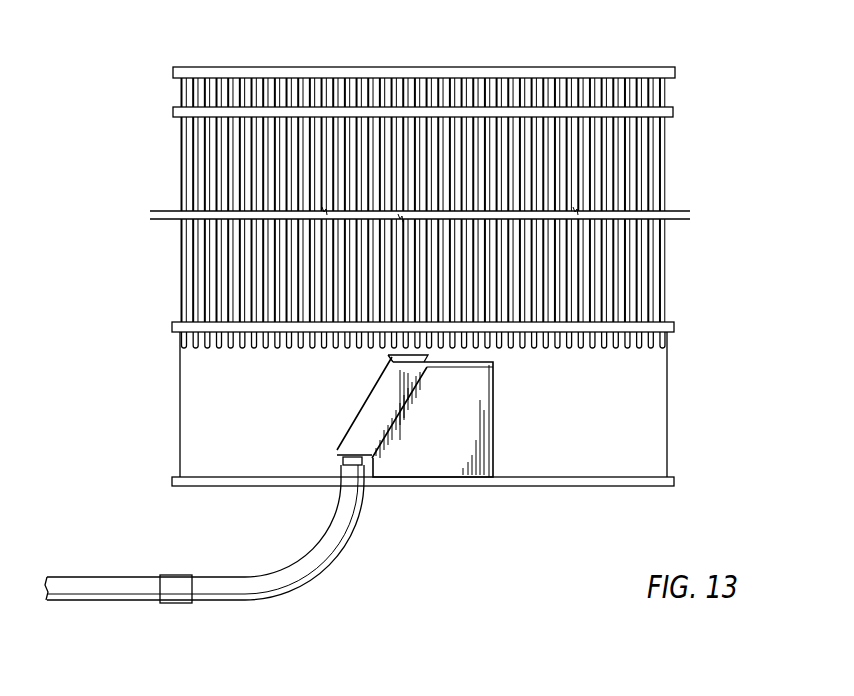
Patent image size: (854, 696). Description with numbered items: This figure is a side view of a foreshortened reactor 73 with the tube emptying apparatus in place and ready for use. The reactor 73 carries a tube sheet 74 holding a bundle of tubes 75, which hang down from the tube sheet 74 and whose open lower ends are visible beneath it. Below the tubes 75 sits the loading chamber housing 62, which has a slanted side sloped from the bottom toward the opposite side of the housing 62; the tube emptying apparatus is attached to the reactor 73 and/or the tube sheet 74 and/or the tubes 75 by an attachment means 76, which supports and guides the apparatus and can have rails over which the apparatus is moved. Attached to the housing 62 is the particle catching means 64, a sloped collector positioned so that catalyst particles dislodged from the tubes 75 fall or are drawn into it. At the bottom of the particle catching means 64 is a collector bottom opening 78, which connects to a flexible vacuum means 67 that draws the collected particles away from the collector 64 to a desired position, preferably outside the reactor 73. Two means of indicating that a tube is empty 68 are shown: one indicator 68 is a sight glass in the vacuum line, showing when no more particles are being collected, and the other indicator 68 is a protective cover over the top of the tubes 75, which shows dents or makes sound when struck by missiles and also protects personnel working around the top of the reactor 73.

The loading chamber housing 62 is at (472, 470).
The particle catching means 64 is at (366, 402).
The vacuum means 67 is at (273, 566).
The means of indicating that a tube is empty 68 is at (562, 67).
The reactor 73 is at (668, 393).
The tube sheet 74 is at (673, 113).
The tubes 75 is at (180, 343).
The attachment means 76 is at (676, 481).
The collector bottom opening 78 is at (366, 468).